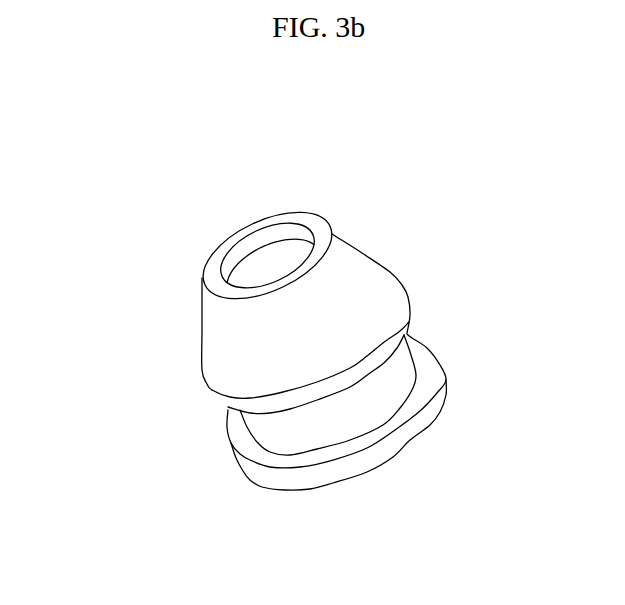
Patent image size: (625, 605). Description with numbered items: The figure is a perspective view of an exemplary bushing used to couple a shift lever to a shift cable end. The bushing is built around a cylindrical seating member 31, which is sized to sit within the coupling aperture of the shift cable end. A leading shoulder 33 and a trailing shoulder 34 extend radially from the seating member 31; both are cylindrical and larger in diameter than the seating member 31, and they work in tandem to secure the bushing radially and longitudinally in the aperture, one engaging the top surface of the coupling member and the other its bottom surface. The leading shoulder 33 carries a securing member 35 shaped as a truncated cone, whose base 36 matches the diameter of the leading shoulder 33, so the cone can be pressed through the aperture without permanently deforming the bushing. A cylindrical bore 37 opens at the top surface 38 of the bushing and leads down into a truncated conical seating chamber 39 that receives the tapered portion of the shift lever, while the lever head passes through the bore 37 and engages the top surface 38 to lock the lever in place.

The seating member 31 is at (313, 430).
The leading shoulder 33 is at (408, 320).
The trailing shoulder 34 is at (437, 410).
The securing member 35 is at (358, 272).
The base 36 is at (212, 388).
The bore 37 is at (262, 238).
The top surface 38 is at (302, 218).
The seating chamber 39 is at (262, 262).